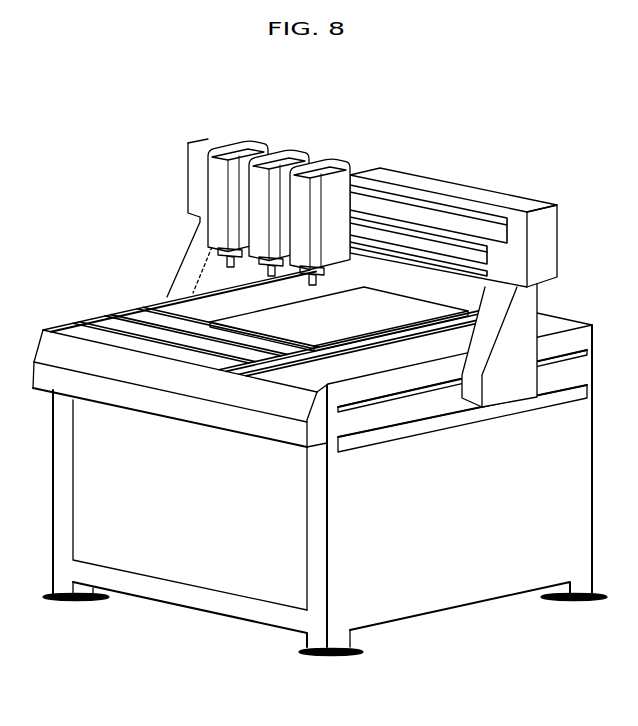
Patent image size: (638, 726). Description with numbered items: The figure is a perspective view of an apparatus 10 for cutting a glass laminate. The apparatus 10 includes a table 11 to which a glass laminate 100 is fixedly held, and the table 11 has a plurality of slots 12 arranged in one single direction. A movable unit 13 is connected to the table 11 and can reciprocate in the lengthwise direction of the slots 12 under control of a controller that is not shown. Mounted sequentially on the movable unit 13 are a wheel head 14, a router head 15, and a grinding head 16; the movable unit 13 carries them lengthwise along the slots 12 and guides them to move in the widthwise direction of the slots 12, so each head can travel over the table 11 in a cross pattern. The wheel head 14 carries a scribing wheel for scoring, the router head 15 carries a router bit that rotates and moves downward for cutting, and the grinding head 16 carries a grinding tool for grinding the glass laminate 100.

The apparatus for cutting a glass laminate 10 is at (78, 142).
The table 11 is at (43, 330).
The slots 12 is at (143, 312).
The movable unit 13 is at (483, 200).
The wheel head 14 is at (337, 150).
The router head 15 is at (293, 145).
The grinding head 16 is at (248, 132).
The glass laminate 100 is at (387, 308).